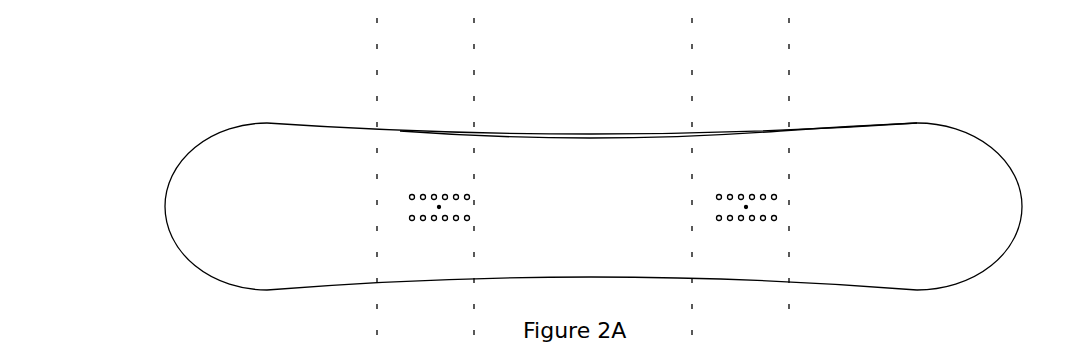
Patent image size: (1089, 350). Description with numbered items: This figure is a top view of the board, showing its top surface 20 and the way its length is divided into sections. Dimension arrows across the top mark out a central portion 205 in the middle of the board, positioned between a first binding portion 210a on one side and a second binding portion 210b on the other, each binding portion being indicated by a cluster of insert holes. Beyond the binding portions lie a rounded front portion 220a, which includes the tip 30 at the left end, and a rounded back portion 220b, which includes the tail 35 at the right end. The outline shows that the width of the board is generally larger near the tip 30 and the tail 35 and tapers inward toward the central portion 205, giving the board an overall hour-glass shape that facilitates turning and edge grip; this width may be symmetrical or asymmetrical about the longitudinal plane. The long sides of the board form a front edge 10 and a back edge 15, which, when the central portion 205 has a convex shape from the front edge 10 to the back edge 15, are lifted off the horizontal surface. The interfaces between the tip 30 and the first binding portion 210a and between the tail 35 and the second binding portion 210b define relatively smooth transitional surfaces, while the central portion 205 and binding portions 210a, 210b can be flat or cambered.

The front edge 10 is at (583, 277).
The back edge 15 is at (566, 133).
The top surface 20 is at (812, 148).
The tip 30 is at (195, 180).
The tail 35 is at (1005, 192).
The central portion 205 is at (691, 32).
The first binding portion 210a is at (473, 32).
The second binding portion 210b is at (788, 30).
The rounded front portion 220a is at (376, 34).
The rounded back portion 220b is at (1018, 25).